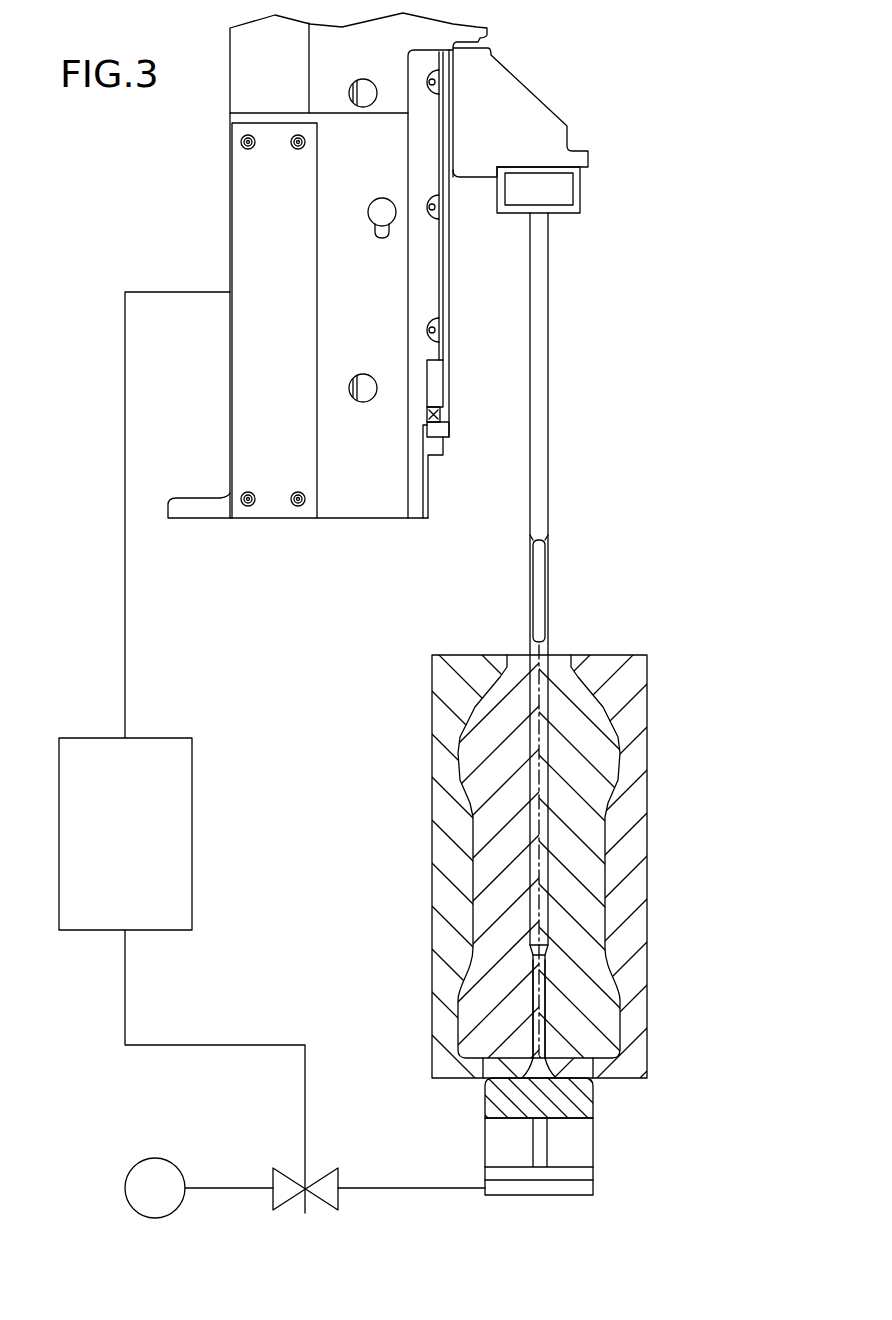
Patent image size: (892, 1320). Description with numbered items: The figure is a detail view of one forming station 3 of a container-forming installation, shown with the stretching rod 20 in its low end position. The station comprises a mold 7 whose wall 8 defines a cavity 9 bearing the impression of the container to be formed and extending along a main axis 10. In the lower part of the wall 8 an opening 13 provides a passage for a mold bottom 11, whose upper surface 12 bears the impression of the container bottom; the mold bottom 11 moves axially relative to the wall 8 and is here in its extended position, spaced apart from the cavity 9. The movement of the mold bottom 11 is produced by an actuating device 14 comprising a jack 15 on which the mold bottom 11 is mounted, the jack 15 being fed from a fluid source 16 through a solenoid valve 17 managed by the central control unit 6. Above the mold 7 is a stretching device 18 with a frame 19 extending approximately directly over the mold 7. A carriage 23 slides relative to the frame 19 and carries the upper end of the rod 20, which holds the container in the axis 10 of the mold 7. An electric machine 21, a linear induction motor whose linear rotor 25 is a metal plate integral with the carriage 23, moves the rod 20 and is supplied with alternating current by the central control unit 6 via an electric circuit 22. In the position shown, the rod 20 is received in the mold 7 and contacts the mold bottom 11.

The forming station 3 is at (187, 180).
The central control unit 6 is at (192, 795).
The mold 7 is at (650, 680).
The wall 8 is at (636, 745).
The cavity 9 is at (500, 743).
The main axis 10 is at (541, 985).
The mold bottom 11 is at (588, 1098).
The upper surface 12 is at (514, 1076).
The opening 13 is at (553, 1068).
The actuating device 14 is at (450, 1163).
The jack 15 is at (597, 1160).
The fluid source 16 is at (128, 1172).
The solenoid valve 17 is at (338, 1205).
The stretching device 18 is at (557, 109).
The frame 19 is at (247, 53).
The stretching rod 20 is at (540, 377).
The electric machine 21 is at (447, 258).
The electric circuit 22 is at (168, 290).
The carriage 23 is at (503, 92).
The linear rotor 25 is at (433, 382).